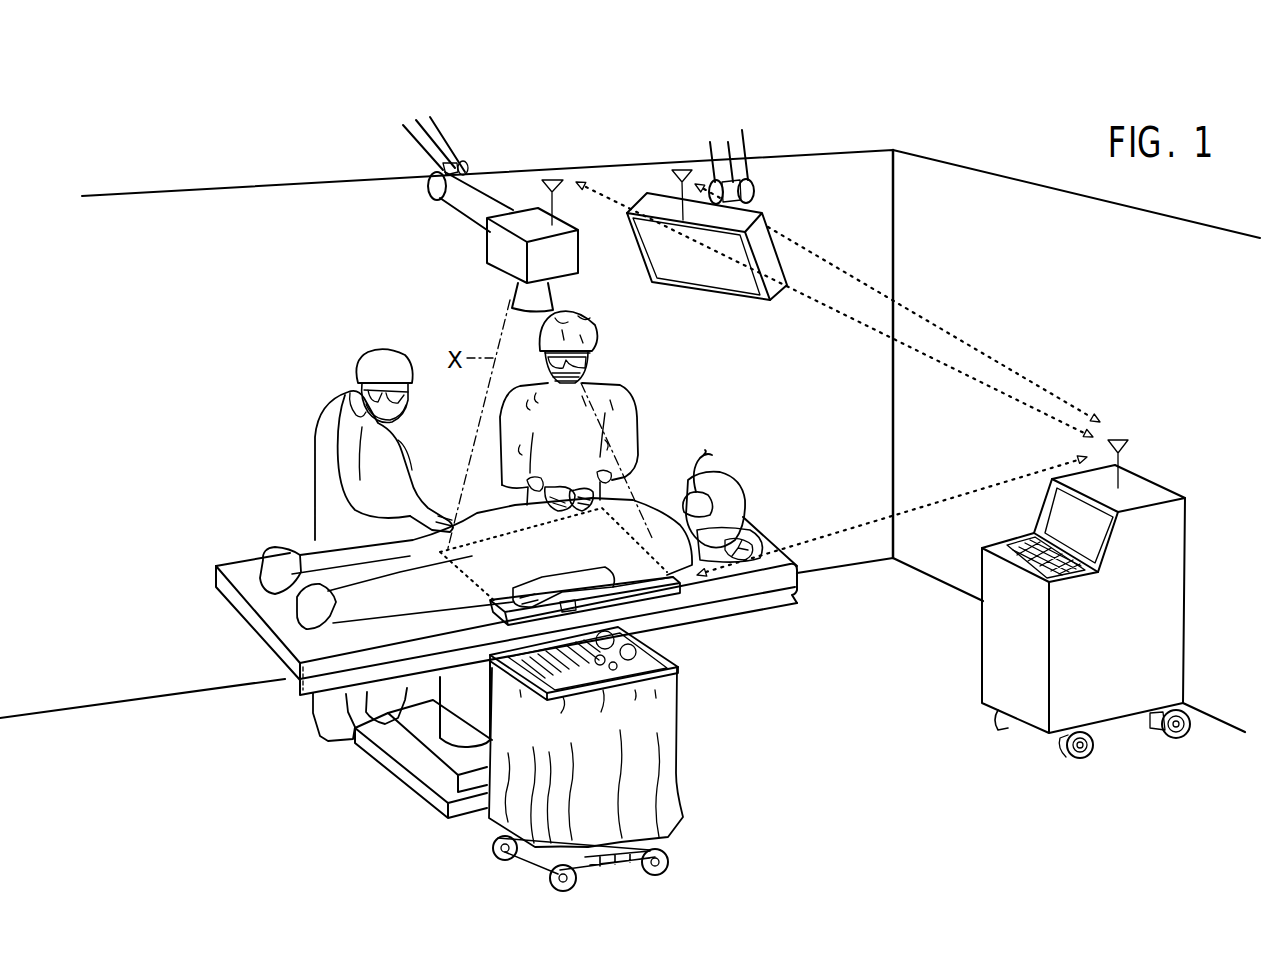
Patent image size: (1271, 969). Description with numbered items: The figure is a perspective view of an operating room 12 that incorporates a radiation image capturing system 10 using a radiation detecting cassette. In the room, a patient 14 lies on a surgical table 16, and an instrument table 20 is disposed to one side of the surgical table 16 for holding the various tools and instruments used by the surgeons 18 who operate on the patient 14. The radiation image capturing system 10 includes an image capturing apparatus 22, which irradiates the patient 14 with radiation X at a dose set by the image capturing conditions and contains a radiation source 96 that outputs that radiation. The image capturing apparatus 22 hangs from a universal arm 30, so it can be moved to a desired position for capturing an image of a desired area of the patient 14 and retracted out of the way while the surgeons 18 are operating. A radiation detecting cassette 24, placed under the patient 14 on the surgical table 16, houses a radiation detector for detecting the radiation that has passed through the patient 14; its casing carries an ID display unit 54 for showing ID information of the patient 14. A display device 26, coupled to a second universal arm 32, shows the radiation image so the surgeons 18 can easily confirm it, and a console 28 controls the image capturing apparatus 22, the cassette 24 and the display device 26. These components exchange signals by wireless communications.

The radiation image capturing system 10 is at (816, 420).
The operating room 12 is at (877, 220).
The patient 14 is at (310, 568).
The surgical table 16 is at (243, 568).
The surgeons 18 is at (332, 465).
The instrument table 20 is at (632, 718).
The image capturing apparatus 22 is at (482, 248).
The radiation detecting cassette 24 is at (495, 605).
The display device 26 is at (777, 232).
The console 28 is at (995, 660).
The universal arm 30 is at (438, 140).
The universal arm 32 is at (742, 142).
The ID display unit 54 is at (613, 600).
The radiation source 96 is at (552, 290).